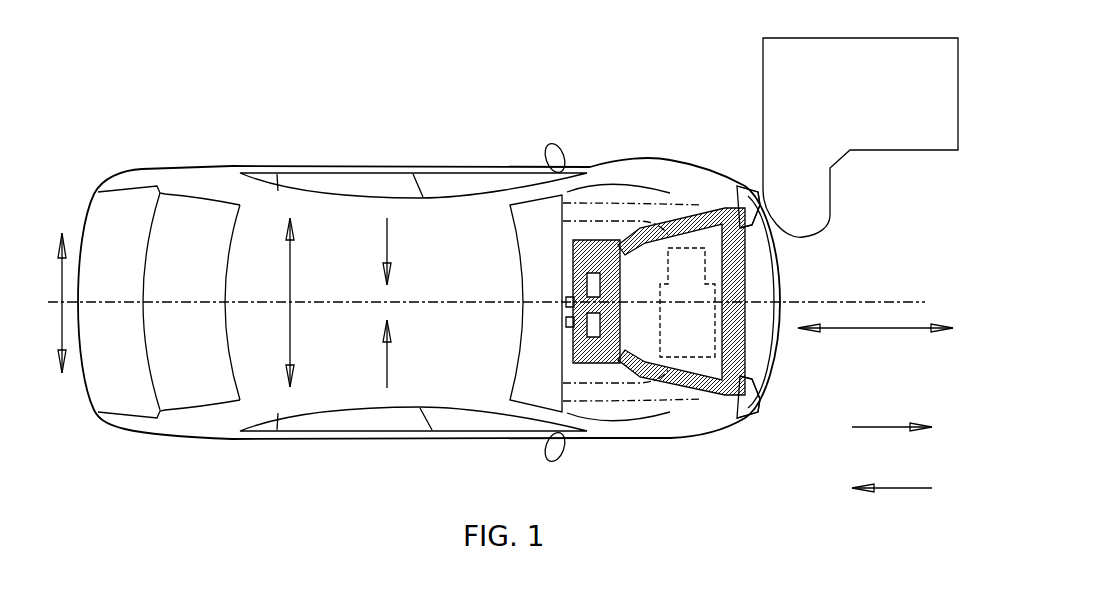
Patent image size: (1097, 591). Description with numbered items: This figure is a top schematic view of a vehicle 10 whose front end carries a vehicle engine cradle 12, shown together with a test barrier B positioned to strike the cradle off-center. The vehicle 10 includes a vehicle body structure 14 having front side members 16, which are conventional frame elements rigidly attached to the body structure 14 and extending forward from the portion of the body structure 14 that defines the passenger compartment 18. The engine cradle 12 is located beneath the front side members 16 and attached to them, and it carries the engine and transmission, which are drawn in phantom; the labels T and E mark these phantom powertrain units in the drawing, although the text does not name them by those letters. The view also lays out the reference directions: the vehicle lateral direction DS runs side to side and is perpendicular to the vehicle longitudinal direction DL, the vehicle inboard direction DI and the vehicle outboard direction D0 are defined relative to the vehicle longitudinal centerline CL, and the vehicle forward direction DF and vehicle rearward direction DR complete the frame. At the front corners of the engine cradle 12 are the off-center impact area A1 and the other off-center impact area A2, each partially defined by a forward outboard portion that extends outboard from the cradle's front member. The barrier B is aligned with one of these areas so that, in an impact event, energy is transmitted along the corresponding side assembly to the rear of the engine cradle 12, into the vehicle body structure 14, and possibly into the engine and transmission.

The vehicle 10 is at (357, 92).
The vehicle engine cradle 12 is at (692, 393).
The vehicle body structure 14 is at (370, 440).
The front side members 16 is at (633, 208).
The passenger compartment 18 is at (413, 187).
The powertrain unit T is at (740, 262).
The electric unit E is at (742, 342).
The barrier B is at (895, 107).
The off-center impact area A1 is at (722, 402).
The off-center impact area A2 is at (727, 203).
The vehicle longitudinal centerline CL is at (910, 302).
The vehicle outboard direction D0 is at (291, 270).
The vehicle inboard direction DI is at (388, 248).
The vehicle lateral direction DS is at (58, 282).
The vehicle longitudinal direction DL is at (888, 330).
The vehicle forward direction DF is at (860, 428).
The vehicle rearward direction DR is at (907, 490).